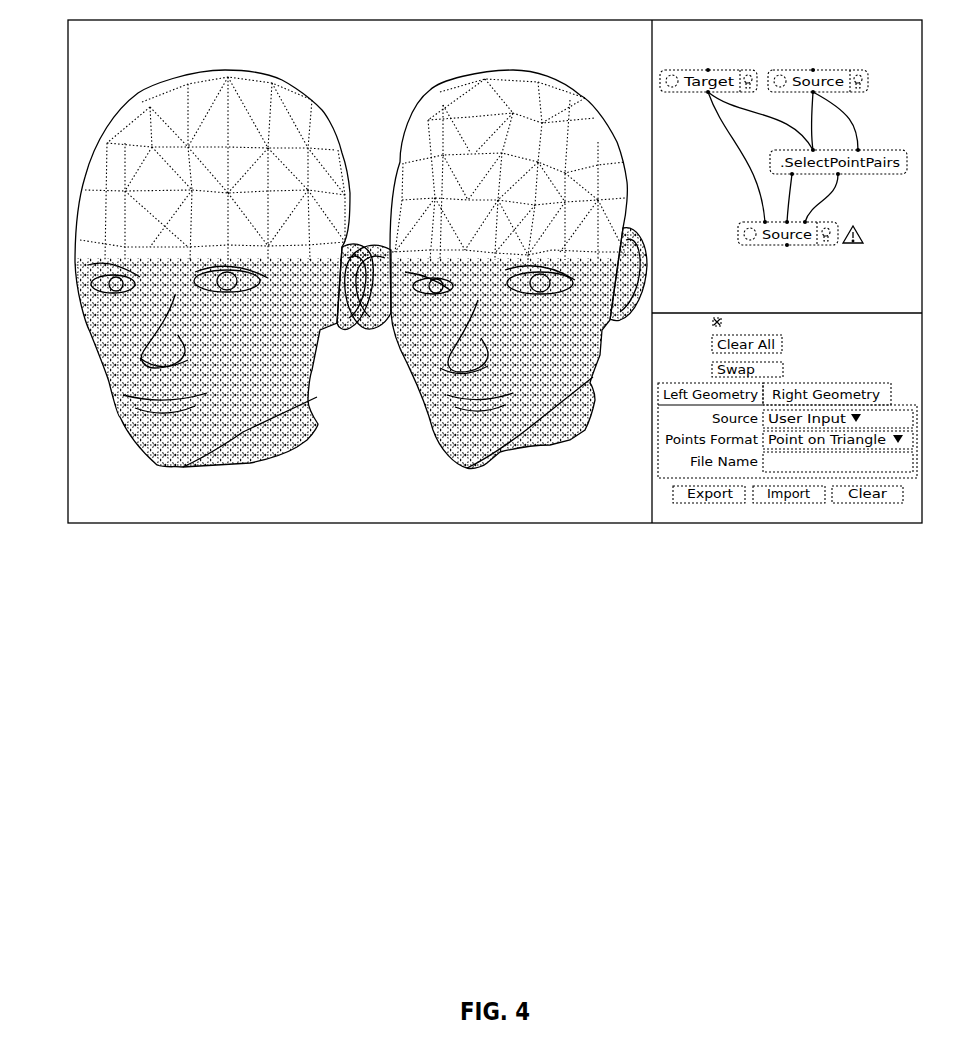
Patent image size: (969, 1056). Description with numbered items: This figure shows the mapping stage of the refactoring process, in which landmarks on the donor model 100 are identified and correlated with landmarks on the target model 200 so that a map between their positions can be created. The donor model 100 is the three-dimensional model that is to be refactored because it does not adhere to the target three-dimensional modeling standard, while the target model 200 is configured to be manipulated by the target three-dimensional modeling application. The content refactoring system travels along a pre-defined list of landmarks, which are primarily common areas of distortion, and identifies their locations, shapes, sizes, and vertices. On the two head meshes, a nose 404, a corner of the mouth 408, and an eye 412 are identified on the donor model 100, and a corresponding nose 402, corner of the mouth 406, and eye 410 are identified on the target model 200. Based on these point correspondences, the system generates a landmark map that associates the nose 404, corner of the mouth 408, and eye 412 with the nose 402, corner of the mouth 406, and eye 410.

The donor model 100 is at (457, 87).
The target model 200 is at (170, 83).
The nose of the target model 402 is at (132, 349).
The nose of the donor model 404 is at (453, 350).
The corner of the mouth of the target model 406 is at (118, 394).
The corner of the mouth of the donor model 408 is at (436, 391).
The eye of the target model 410 is at (102, 273).
The eye of the donor model 412 is at (424, 275).